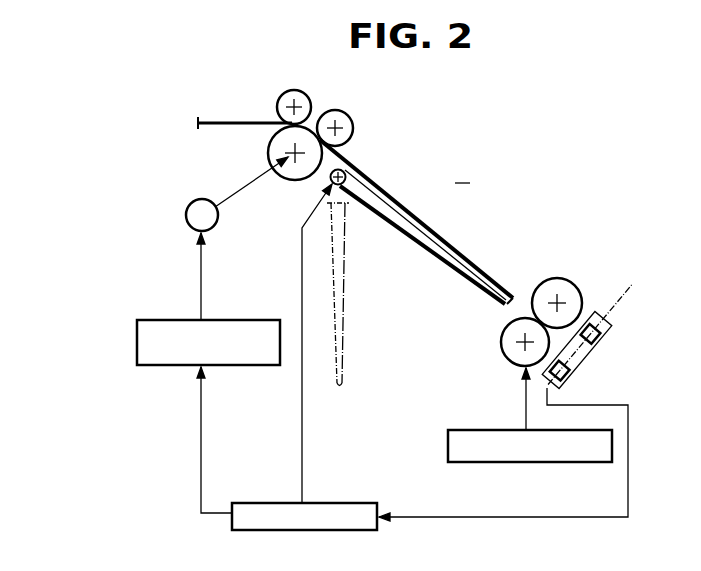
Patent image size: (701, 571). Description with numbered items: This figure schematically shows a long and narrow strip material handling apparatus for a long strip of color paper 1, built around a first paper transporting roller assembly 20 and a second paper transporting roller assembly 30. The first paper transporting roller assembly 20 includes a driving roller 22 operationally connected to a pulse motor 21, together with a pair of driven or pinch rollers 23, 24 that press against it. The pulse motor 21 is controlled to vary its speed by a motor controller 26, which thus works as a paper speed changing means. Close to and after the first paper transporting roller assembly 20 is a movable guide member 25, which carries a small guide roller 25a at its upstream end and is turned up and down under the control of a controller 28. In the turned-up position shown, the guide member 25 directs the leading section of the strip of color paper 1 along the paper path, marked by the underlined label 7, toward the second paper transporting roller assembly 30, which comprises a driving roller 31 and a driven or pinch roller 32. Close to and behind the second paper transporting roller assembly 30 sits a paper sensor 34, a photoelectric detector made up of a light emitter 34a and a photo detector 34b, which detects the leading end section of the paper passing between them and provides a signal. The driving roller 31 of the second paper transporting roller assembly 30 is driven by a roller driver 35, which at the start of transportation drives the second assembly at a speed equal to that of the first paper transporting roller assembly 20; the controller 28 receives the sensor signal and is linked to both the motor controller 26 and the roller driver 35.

The long strip of color paper 1 is at (401, 196).
The sheet 7 is at (462, 174).
The first paper transporting roller assembly 20 is at (270, 93).
The pulse motor 21 is at (204, 199).
The driving roller 22 is at (270, 147).
The pinch roller 23 is at (293, 89).
The pinch roller 24 is at (335, 110).
The movable guide member 25 is at (427, 242).
The guide roller 25a is at (343, 170).
The motor controller 26 is at (233, 320).
The controller 28 is at (330, 503).
The second paper transporting roller assembly 30 is at (548, 278).
The driving roller 31 is at (501, 337).
The pinch roller 32 is at (575, 287).
The paper sensor 34 is at (614, 349).
The light emitter 34a is at (600, 336).
The photo detector 34b is at (567, 377).
The roller driver 35 is at (480, 430).